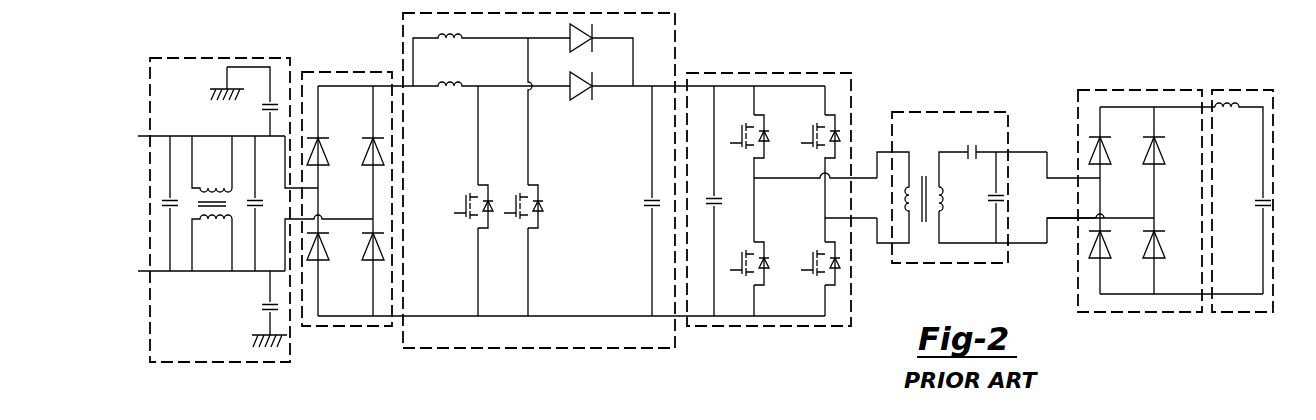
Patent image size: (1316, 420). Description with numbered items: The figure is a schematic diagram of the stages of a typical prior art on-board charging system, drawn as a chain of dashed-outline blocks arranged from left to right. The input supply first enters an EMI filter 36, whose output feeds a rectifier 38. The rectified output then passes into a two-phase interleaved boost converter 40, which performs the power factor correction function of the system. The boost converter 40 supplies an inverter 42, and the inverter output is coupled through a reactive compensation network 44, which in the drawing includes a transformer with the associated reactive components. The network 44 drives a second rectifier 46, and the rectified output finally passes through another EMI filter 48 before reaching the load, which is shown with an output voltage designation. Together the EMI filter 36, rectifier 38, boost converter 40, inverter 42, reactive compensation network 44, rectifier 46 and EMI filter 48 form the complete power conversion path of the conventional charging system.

The EMI filter 36 is at (213, 58).
The rectifier 38 is at (352, 72).
The two-phase interleaved boost converter 40 is at (545, 13).
The inverter 42 is at (778, 73).
The reactive compensation network 44 is at (950, 112).
The rectifier 46 is at (1147, 90).
The EMI filter 48 is at (1243, 90).